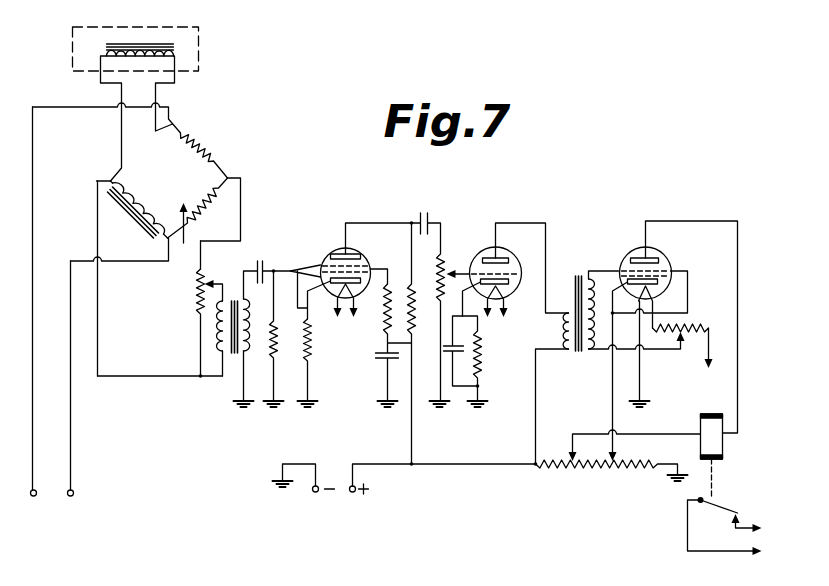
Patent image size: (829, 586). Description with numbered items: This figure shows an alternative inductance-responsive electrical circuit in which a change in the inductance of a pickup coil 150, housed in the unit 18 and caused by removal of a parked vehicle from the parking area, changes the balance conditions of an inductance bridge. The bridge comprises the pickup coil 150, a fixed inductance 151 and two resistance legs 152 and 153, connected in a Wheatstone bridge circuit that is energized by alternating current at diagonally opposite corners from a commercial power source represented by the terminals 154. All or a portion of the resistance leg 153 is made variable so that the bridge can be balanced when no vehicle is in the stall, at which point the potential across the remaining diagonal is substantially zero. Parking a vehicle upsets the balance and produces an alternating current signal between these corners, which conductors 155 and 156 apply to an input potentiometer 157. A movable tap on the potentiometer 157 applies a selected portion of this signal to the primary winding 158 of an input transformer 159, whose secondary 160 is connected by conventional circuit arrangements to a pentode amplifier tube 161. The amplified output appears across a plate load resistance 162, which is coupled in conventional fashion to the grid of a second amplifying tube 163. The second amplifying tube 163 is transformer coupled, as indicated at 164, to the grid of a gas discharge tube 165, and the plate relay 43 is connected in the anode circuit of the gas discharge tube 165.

The sensing unit 18 is at (200, 30).
The pickup coil 150 is at (178, 60).
The fixed inductance 151 is at (143, 212).
The resistance leg 152 is at (198, 137).
The resistance leg 153 is at (208, 201).
The terminals 154 is at (38, 497).
The conductor 155 is at (100, 310).
The conductor 156 is at (197, 257).
The input potentiometer 157 is at (198, 303).
The primary winding 158 is at (215, 333).
The input transformer 159 is at (231, 297).
The secondary 160 is at (247, 323).
The pentode amplifier tube 161 is at (327, 248).
The plate load resistance 162 is at (407, 287).
The second amplifying tube 163 is at (482, 246).
The transformer coupling 164 is at (575, 300).
The gas discharge tube 165 is at (630, 246).
The plate relay 43 is at (712, 437).